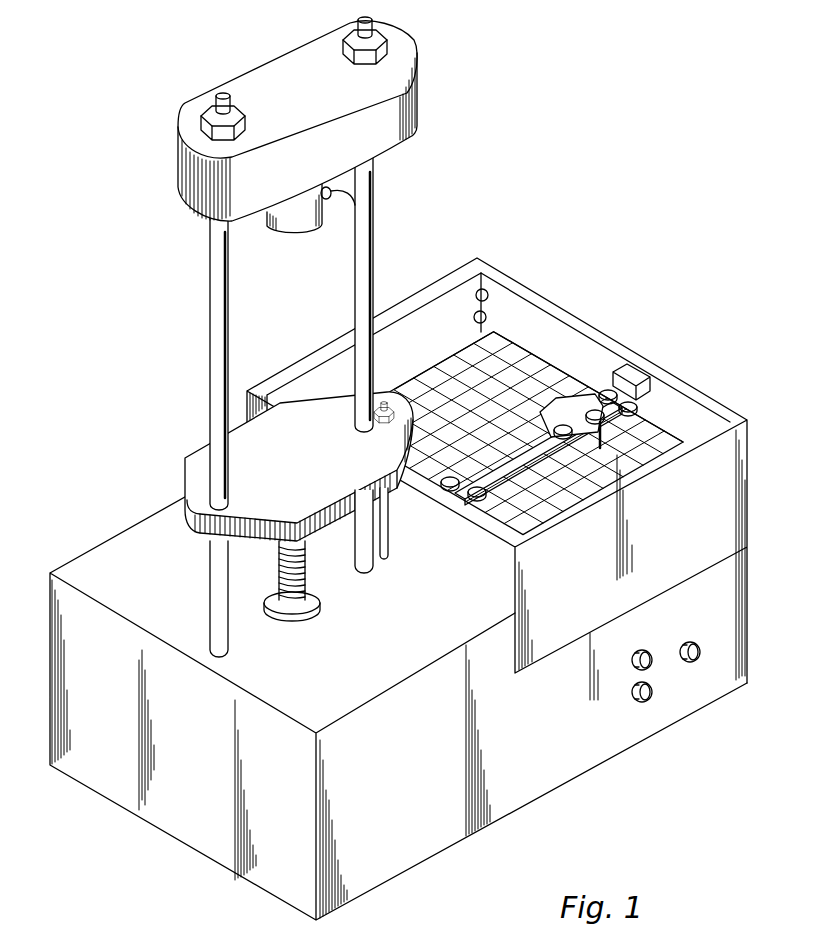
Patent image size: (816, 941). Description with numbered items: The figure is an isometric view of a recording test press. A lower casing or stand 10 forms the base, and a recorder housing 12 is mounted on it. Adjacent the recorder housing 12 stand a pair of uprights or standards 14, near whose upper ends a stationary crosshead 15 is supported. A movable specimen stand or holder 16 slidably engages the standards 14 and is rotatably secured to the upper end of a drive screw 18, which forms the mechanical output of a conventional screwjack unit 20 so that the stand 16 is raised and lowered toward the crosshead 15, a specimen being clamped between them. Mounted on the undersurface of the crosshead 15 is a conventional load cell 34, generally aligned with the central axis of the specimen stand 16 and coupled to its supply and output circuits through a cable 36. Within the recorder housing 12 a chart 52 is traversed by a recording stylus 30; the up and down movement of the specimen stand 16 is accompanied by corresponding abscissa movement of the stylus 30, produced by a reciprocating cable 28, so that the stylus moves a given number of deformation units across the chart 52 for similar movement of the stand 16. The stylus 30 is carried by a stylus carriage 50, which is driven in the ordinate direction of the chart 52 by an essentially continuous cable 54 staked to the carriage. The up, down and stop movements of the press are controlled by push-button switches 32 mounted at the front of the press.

The lower casing or stand 10 is at (163, 813).
The recorder housing 12 is at (753, 433).
The uprights or standards 14 is at (376, 213).
The stationary crosshead 15 is at (266, 65).
The movable specimen stand or holder 16 is at (202, 458).
The drive screw 18 is at (306, 554).
The screwjack unit 20 is at (324, 607).
The cable 28 is at (558, 355).
The recording stylus 30 is at (603, 448).
The push-button switches 32 is at (700, 668).
The load cell 34 is at (272, 230).
The cable 36 is at (347, 203).
The stylus carriage 50 is at (633, 370).
The chart 52 is at (455, 362).
The continuous cable 54 is at (525, 315).